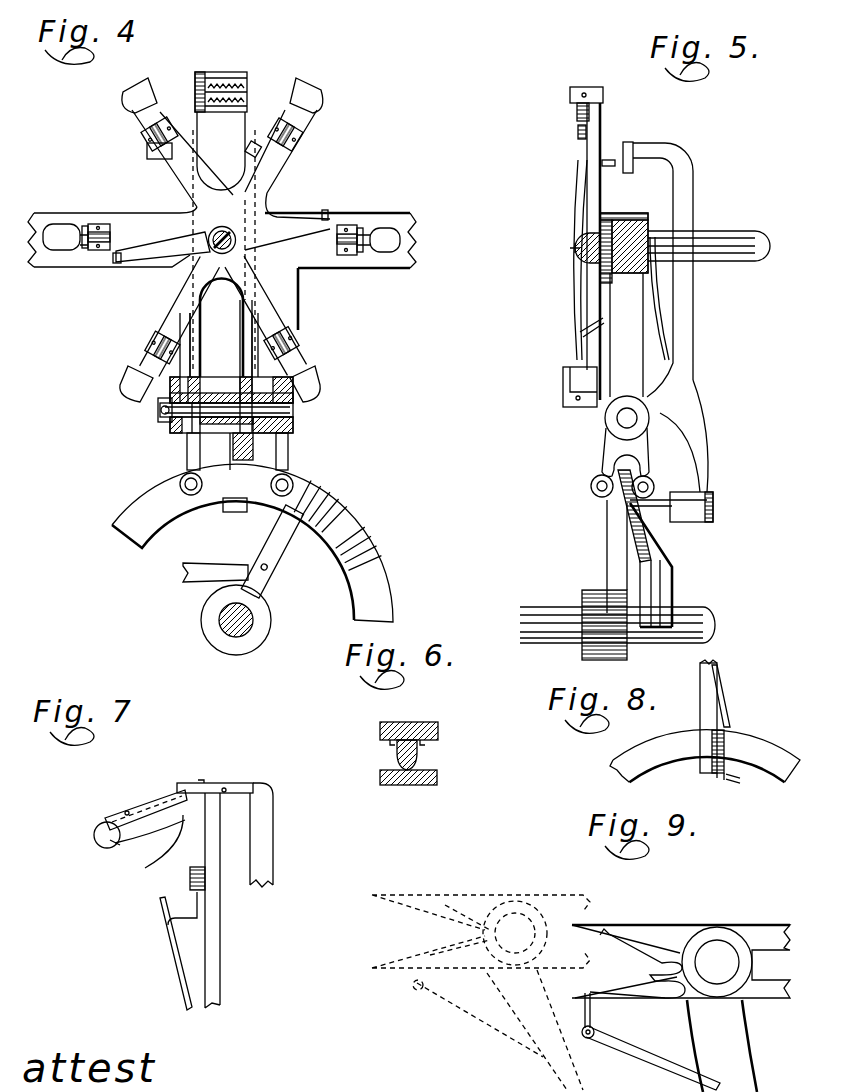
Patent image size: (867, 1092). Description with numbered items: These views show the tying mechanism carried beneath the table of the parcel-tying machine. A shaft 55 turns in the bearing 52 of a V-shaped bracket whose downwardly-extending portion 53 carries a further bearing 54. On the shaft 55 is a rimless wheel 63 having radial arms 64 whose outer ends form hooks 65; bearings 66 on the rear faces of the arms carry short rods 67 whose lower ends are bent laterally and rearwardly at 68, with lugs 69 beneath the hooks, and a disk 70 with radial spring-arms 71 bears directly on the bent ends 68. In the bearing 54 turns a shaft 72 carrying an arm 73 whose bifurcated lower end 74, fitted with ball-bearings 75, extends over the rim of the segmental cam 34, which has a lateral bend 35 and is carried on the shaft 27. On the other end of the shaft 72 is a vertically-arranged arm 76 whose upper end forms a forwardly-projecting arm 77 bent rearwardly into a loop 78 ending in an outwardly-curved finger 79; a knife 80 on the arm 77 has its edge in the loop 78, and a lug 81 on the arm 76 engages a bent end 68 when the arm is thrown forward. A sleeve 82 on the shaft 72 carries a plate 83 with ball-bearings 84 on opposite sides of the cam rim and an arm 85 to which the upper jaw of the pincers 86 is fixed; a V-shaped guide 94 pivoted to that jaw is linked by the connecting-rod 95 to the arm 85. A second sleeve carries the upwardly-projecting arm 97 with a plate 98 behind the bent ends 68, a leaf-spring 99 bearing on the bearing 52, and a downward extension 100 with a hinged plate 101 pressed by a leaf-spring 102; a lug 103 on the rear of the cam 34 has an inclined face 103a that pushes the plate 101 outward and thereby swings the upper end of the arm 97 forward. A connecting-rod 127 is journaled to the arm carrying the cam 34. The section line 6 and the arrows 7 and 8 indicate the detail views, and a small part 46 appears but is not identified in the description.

In FIG. 5, the downwardly-pending arm 6 is at (635, 113).
In FIG. 4, the horizontally-arranged table 7 is at (241, 28).
In FIG. 5, the pinion 8 is at (808, 503).
In FIG. 4, the shaft 27 is at (228, 637).
In FIG. 5, the shaft 27 is at (540, 643).
In FIG. 4, the segmental cam 34 is at (370, 573).
In FIG. 5, the segmental cam 34 is at (675, 605).
In FIG. 8, the segmental cam 34 is at (768, 752).
In FIG. 4, the lateral bend 35 is at (348, 520).
In FIG. 5, the lateral bend 35 is at (636, 535).
In FIG. 4, the stop lug 46 is at (235, 445).
In FIG. 5, the bearing 52 is at (640, 205).
In FIG. 4, the downwardly-extending portion 53 is at (288, 302).
In FIG. 4, the bearing 54 is at (275, 460).
In FIG. 5, the shaft 55 is at (746, 231).
In FIG. 4, the wheel 63 is at (218, 188).
In FIG. 4, the arms 64 is at (310, 128).
In FIG. 5, the arms 64 is at (592, 358).
In FIG. 6, the arms 64 is at (415, 722).
In FIG. 7, the arms 64 is at (213, 825).
In FIG. 4, the hooks 65 is at (130, 88).
In FIG. 5, the hooks 65 is at (597, 87).
In FIG. 6, the hooks 65 is at (405, 785).
In FIG. 7, the hooks 65 is at (188, 780).
In FIG. 4, the bearings 66 is at (93, 224).
In FIG. 5, the bearings 66 is at (580, 140).
In FIG. 6, the bearings 66 is at (375, 745).
In FIG. 7, the bearings 66 is at (190, 878).
In FIG. 4, the short rods 67 is at (140, 115).
In FIG. 7, the short rods 67 is at (200, 855).
In FIG. 4, the laterally-bent ends 68 is at (118, 264).
In FIG. 5, the laterally-bent ends 68 is at (608, 160).
In FIG. 7, the laterally-bent ends 68 is at (172, 920).
In FIG. 4, the lugs 69 is at (80, 228).
In FIG. 5, the lugs 69 is at (580, 115).
In FIG. 6, the lugs 69 is at (420, 762).
In FIG. 7, the lugs 69 is at (195, 806).
In FIG. 4, the disk 70 is at (250, 255).
In FIG. 5, the disk 70 is at (586, 262).
In FIG. 4, the spring-arms 71 is at (172, 172).
In FIG. 5, the spring-arms 71 is at (578, 175).
In FIG. 7, the spring-arms 71 is at (180, 990).
In FIG. 4, the shaft 72 is at (210, 405).
In FIG. 5, the shaft 72 is at (637, 418).
In FIG. 4, the arm 73 is at (293, 428).
In FIG. 4, the bifurcated lower end 74 is at (290, 462).
In FIG. 5, the bifurcated lower end 74 is at (603, 462).
In FIG. 4, the ball-bearings 75 is at (288, 497).
In FIG. 5, the ball-bearings 75 is at (654, 487).
In FIG. 4, the vertically-arranged arm 76 is at (170, 395).
In FIG. 7, the forwardly-projecting arm 77 is at (100, 822).
In FIG. 7, the loop 78 is at (117, 848).
In FIG. 7, the guide or finger 79 is at (155, 862).
In FIG. 7, the knife 80 is at (147, 806).
In FIG. 4, the lug 81 is at (147, 154).
In FIG. 4, the sleeve 82 is at (214, 425).
In FIG. 4, the downwardly-projecting plate 83 is at (187, 462).
In FIG. 4, the ball-bearings 84 is at (180, 482).
In FIG. 4, the arm 85 is at (195, 340).
In FIG. 9, the arm 85 is at (737, 1047).
In FIG. 4, the pair of pincers 86 is at (230, 70).
In FIG. 9, the pair of pincers 86 is at (670, 935).
In FIG. 9, the V-shaped guide 94 is at (627, 948).
In FIG. 9, the connecting-rod 95 is at (640, 1052).
In FIG. 4, the upwardly-projecting arm 97 is at (248, 367).
In FIG. 5, the upwardly-projecting arm 97 is at (685, 343).
In FIG. 4, the plate 98 is at (262, 140).
In FIG. 5, the plate 98 is at (636, 155).
In FIG. 5, the leaf-spring 99 is at (667, 287).
In FIG. 5, the extension 100 is at (690, 466).
In FIG. 8, the extension 100 is at (700, 720).
In FIG. 5, the hinged plate 101 is at (682, 523).
In FIG. 8, the hinged plate 101 is at (712, 750).
In FIG. 8, the leaf-spring 102 is at (728, 716).
In FIG. 5, the lug 103 is at (660, 545).
In FIG. 8, the lug 103 is at (745, 780).
In FIG. 8, the inclined face 103a is at (722, 778).
In FIG. 4, the connecting-rod 127 is at (190, 580).